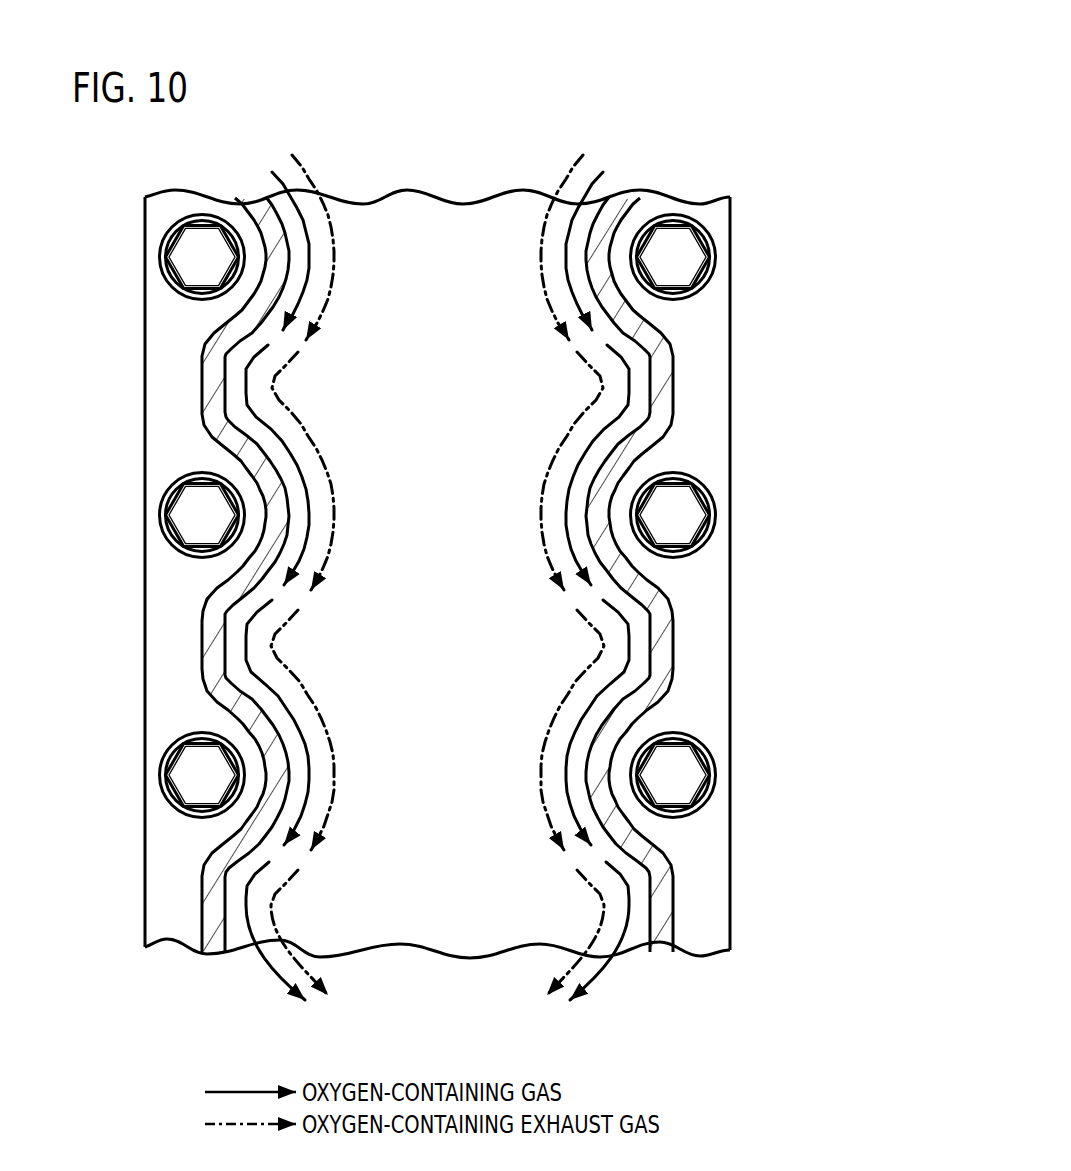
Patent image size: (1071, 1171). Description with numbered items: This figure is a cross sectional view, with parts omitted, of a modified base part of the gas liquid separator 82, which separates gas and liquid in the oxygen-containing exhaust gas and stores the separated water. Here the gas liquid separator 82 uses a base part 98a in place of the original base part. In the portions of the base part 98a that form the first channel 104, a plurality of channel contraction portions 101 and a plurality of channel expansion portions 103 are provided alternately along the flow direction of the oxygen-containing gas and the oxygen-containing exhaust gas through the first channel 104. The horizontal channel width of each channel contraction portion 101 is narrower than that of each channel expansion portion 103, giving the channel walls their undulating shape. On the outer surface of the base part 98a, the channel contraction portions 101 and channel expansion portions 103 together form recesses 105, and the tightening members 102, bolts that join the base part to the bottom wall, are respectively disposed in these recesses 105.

The gas liquid separator 82 is at (686, 152).
The base part 98a is at (265, 260).
The channel contraction portion 101 is at (600, 265).
The tightening member 102 is at (195, 777).
The channel expansion portion 103 is at (663, 372).
The first channel 104 is at (462, 222).
The recess 105 is at (223, 563).